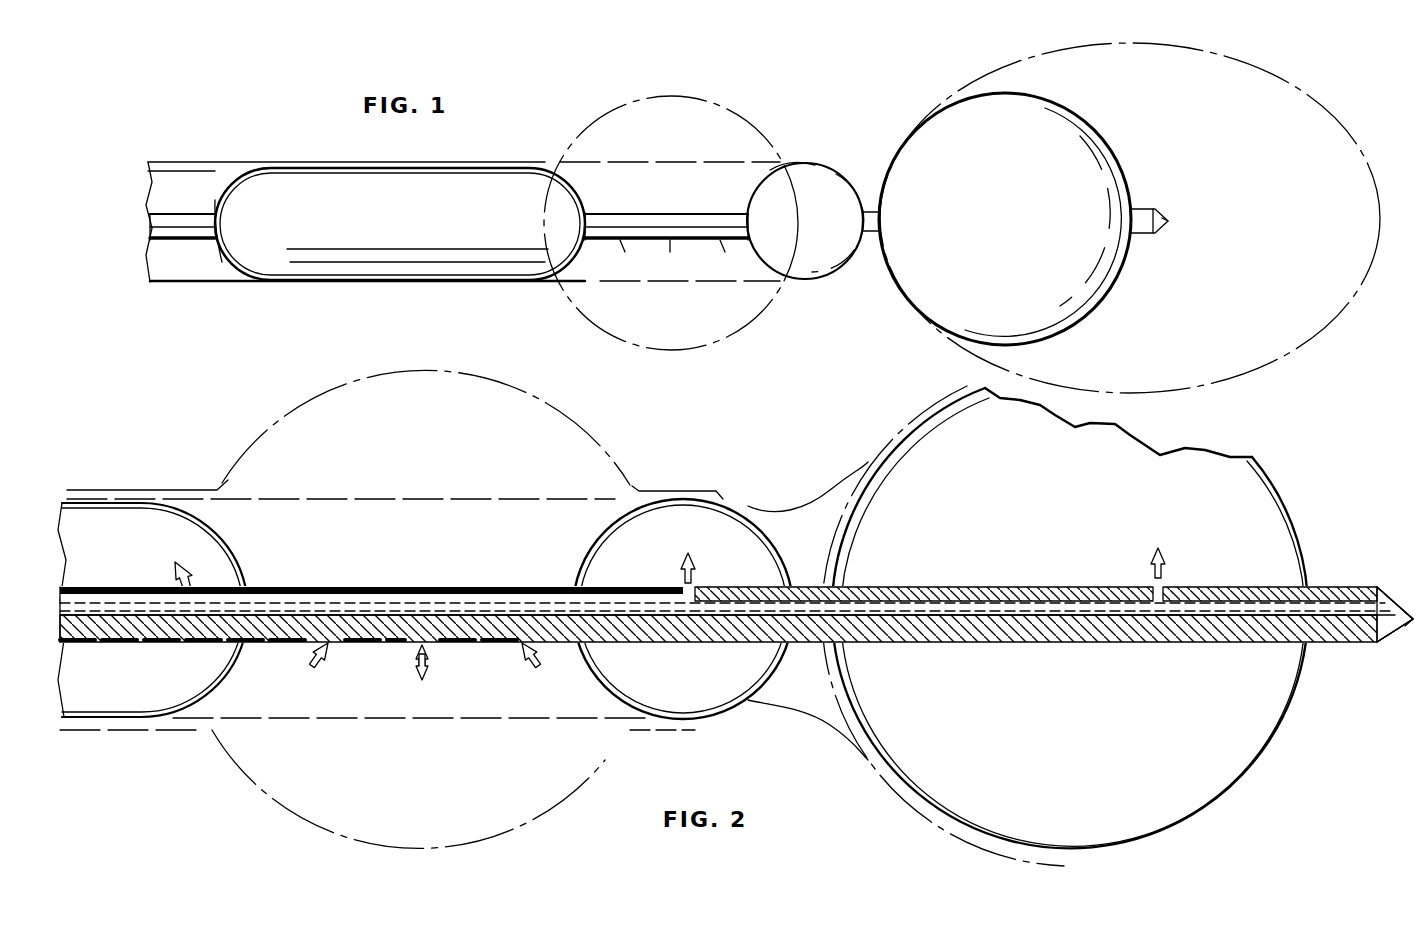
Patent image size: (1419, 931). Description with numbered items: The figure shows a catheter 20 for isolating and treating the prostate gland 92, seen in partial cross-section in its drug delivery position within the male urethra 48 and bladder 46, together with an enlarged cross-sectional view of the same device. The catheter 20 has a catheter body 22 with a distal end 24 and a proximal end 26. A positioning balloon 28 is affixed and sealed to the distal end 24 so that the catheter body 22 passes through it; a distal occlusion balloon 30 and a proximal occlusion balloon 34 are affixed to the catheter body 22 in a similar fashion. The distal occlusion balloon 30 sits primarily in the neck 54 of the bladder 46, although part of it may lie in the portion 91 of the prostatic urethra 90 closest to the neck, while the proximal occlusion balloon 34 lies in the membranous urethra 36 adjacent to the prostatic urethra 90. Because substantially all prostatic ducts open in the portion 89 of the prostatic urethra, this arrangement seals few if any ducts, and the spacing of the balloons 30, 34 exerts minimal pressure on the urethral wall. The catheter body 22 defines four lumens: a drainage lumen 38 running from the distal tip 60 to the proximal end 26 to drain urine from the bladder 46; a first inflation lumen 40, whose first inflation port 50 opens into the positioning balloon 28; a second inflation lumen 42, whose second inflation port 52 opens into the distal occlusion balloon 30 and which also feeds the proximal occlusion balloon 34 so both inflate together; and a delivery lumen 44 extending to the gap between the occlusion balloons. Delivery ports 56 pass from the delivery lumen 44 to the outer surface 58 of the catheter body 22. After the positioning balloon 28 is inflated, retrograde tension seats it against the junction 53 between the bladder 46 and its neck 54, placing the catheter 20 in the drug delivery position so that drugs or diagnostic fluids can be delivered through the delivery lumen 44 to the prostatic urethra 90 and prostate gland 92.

In FIG. 1, the catheter 20 is at (112, 212).
In FIG. 2, the catheter 20 is at (1335, 506).
In FIG. 1, the catheter body 22 is at (176, 213).
In FIG. 2, the catheter body 22 is at (337, 589).
In FIG. 1, the distal end 24 is at (1146, 210).
In FIG. 2, the distal end 24 is at (1338, 588).
In FIG. 1, the proximal end 26 is at (151, 232).
In FIG. 1, the positioning balloon 28 is at (1116, 277).
In FIG. 2, the positioning balloon 28 is at (1211, 799).
In FIG. 1, the distal occlusion balloon 30 is at (826, 182).
In FIG. 2, the distal occlusion balloon 30 is at (694, 722).
In FIG. 1, the proximal occlusion balloon 34 is at (216, 198).
In FIG. 2, the proximal occlusion balloon 34 is at (100, 502).
In FIG. 1, the membranous urethra 36 is at (256, 163).
In FIG. 2, the membranous urethra 36 is at (168, 490).
In FIG. 2, the drainage lumen 38 is at (1386, 601).
In FIG. 2, the first inflation lumen 40 is at (970, 600).
In FIG. 2, the second inflation lumen 42 is at (462, 590).
In FIG. 2, the delivery lumen 44 is at (280, 643).
In FIG. 1, the bladder 46 is at (1296, 93).
In FIG. 2, the bladder 46 is at (918, 806).
In FIG. 1, the urethra 48 is at (538, 163).
In FIG. 2, the urethra 48 is at (277, 498).
In FIG. 2, the first inflation port 50 is at (1167, 580).
In FIG. 2, the second inflation port 52 is at (697, 588).
In FIG. 1, the junction 53 is at (898, 296).
In FIG. 2, the junction 53 is at (871, 757).
In FIG. 1, the neck of the bladder 54 is at (803, 165).
In FIG. 2, the neck of the bladder 54 is at (686, 497).
In FIG. 1, the delivery ports 56 is at (670, 258).
In FIG. 2, the delivery ports 56 is at (525, 643).
In FIG. 1, the outer surface 58 is at (636, 216).
In FIG. 2, the outer surface 58 is at (538, 590).
In FIG. 1, the distal tip 60 is at (1171, 223).
In FIG. 2, the distal tip 60 is at (1381, 644).
In FIG. 1, the portion of the prostatic urethra 89 is at (589, 283).
In FIG. 2, the portion of the prostatic urethra 89 is at (238, 720).
In FIG. 1, the prostatic urethra 90 is at (602, 165).
In FIG. 2, the prostatic urethra 90 is at (517, 499).
In FIG. 1, the portion of the prostatic urethra closest to the bladder neck 91 is at (768, 284).
In FIG. 2, the portion of the prostatic urethra closest to the bladder neck 91 is at (600, 727).
In FIG. 1, the prostate gland 92 is at (708, 101).
In FIG. 2, the prostate gland 92 is at (463, 372).